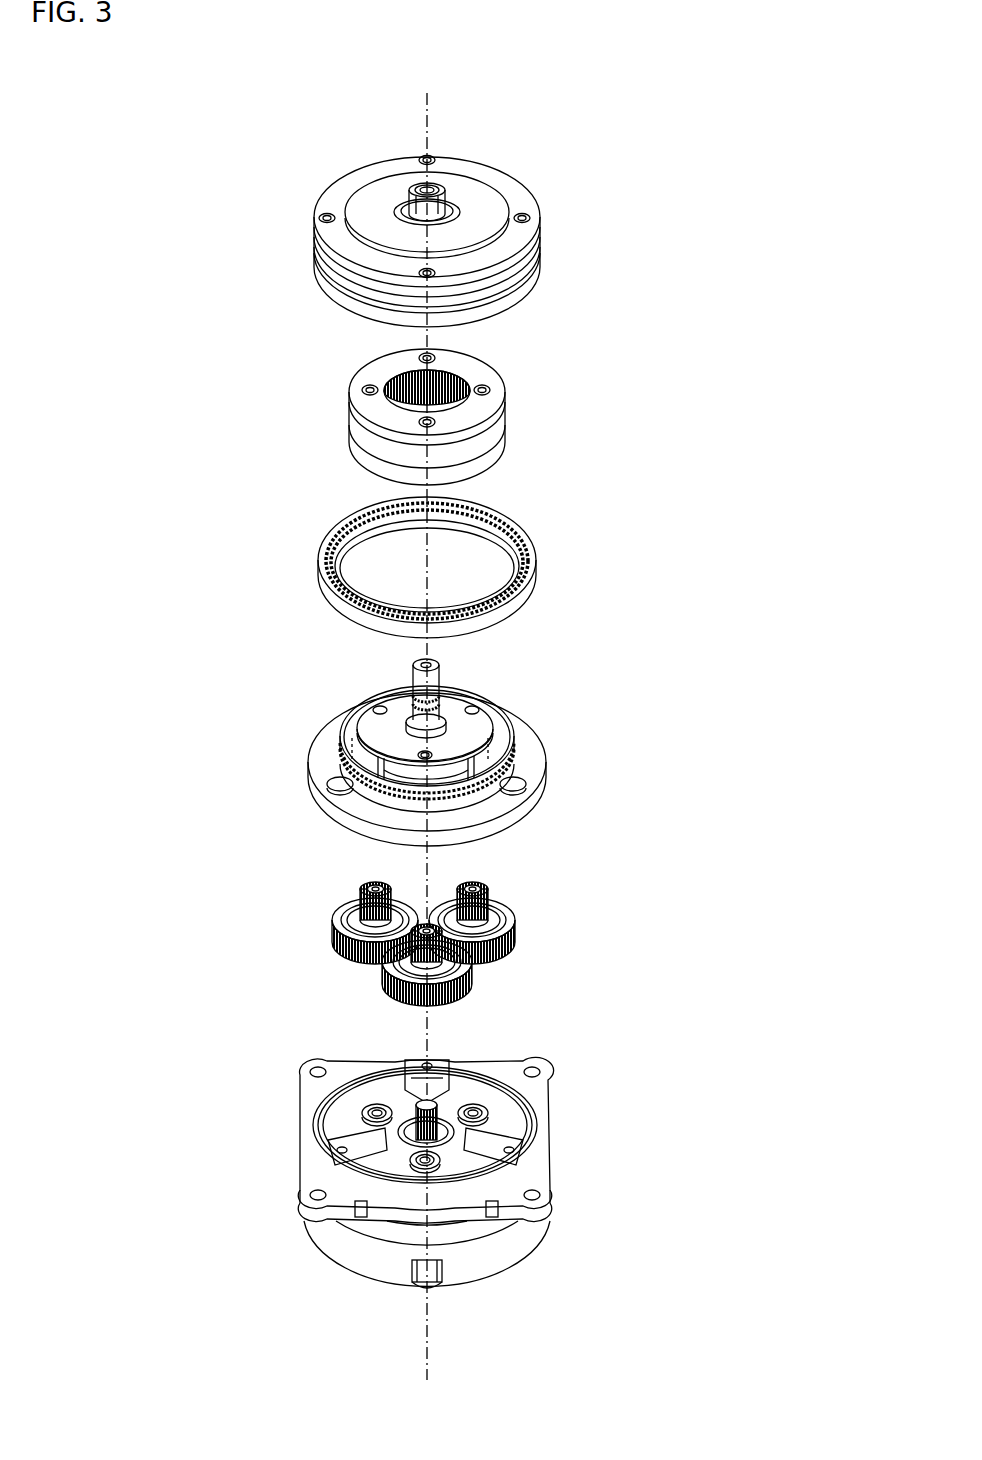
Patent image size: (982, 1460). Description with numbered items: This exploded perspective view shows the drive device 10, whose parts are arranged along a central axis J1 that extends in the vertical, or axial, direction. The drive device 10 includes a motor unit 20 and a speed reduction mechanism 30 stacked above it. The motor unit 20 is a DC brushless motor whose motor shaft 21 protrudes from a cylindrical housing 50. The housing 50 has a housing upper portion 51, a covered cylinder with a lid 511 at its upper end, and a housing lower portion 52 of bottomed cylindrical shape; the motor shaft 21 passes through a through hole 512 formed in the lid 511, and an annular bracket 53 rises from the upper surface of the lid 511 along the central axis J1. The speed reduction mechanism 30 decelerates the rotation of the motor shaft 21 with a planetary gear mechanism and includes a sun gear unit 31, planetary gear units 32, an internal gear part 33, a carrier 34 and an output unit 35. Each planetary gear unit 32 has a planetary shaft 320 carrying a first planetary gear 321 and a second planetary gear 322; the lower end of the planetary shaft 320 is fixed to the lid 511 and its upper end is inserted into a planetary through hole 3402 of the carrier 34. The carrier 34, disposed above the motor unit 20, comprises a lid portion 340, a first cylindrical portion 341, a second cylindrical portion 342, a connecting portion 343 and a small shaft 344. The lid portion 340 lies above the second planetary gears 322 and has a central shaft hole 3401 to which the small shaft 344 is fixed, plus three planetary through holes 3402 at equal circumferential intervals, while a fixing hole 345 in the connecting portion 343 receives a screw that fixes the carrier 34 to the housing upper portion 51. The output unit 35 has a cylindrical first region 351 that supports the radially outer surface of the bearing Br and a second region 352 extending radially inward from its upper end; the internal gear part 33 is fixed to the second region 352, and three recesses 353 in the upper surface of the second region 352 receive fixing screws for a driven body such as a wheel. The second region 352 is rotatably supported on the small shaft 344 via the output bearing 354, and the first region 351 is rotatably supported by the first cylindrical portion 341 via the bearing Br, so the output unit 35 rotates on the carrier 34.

The drive device 10 is at (265, 160).
The motor unit 20 is at (231, 1094).
The motor shaft 21 is at (407, 1127).
The speed reduction mechanism 30 is at (269, 437).
The sun gear unit 31 is at (413, 1110).
The planetary gear unit 32 is at (436, 935).
The internal gear part 33 is at (493, 432).
The carrier 34 is at (304, 709).
The output unit 35 is at (558, 257).
The central axis J1 is at (424, 111).
The bearing Br is at (525, 593).
The housing 50 is at (536, 1279).
The housing upper portion 51 is at (551, 1158).
The housing lower portion 52 is at (530, 1230).
The bracket 53 is at (540, 1118).
The lid 511 is at (475, 1093).
The through hole 512 is at (313, 1065).
The planetary shaft 320 is at (371, 887).
The first planetary gear 321 is at (332, 937).
The second planetary gear 322 is at (357, 910).
The lid portion 340 is at (477, 722).
The first cylindrical portion 341 is at (510, 758).
The second cylindrical portion 342 is at (522, 808).
The connecting portion 343 is at (470, 805).
The small shaft 344 is at (432, 685).
The fixing hole 345 is at (325, 786).
The shaft hole 3401 is at (343, 727).
The planetary through hole 3402 is at (377, 705).
The first region 351 is at (567, 315).
The second region 352 is at (517, 205).
The recess 353 is at (431, 158).
The output bearing 354 is at (448, 190).